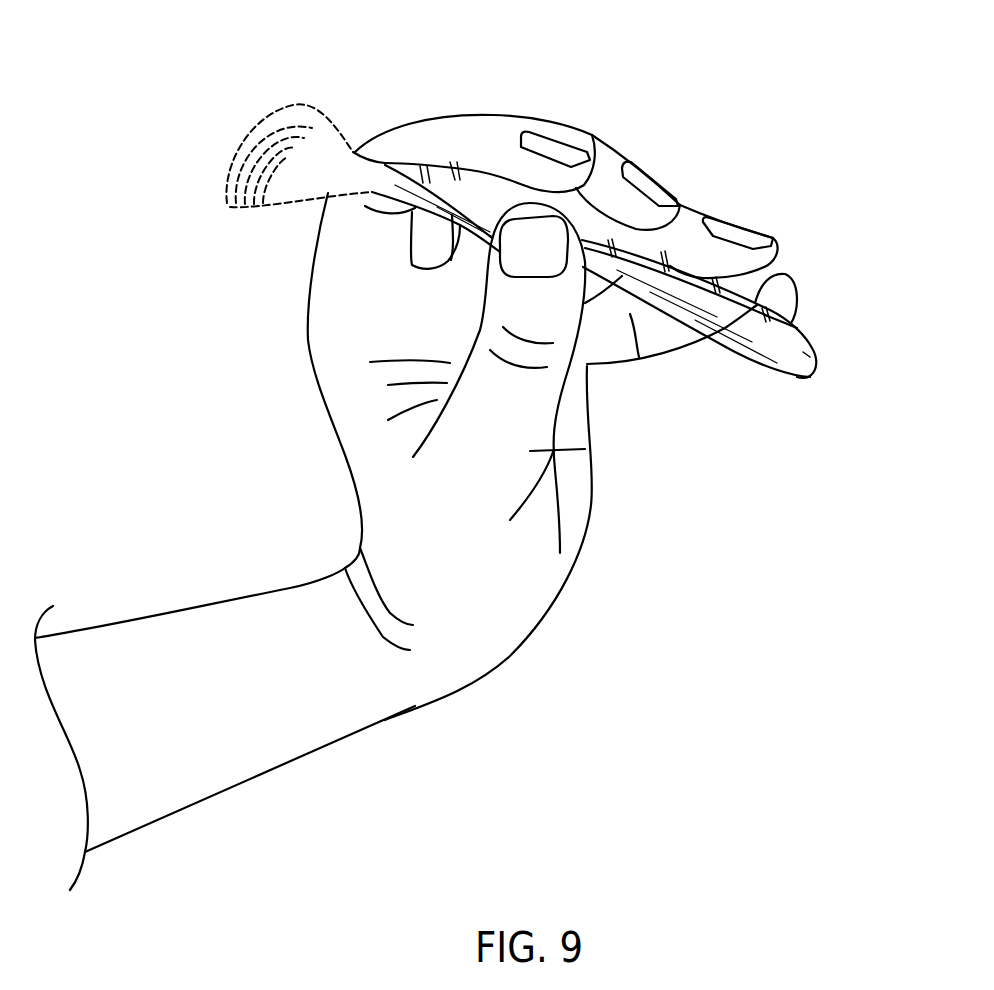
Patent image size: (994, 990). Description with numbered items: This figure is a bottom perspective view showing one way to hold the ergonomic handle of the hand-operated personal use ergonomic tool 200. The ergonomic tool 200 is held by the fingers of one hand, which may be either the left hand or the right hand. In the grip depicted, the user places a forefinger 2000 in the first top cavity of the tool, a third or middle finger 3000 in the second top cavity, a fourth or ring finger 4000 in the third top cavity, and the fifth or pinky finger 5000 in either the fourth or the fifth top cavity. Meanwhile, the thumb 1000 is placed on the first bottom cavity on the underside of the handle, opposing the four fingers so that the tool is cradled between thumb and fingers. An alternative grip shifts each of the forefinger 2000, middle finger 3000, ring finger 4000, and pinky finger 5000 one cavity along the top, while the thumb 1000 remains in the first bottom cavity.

The ergonomic tool 200 is at (350, 84).
The thumb 1000 is at (585, 449).
The forefinger 2000 is at (476, 127).
The middle finger 3000 is at (611, 150).
The ring finger 4000 is at (698, 213).
The pinky finger 5000 is at (780, 295).